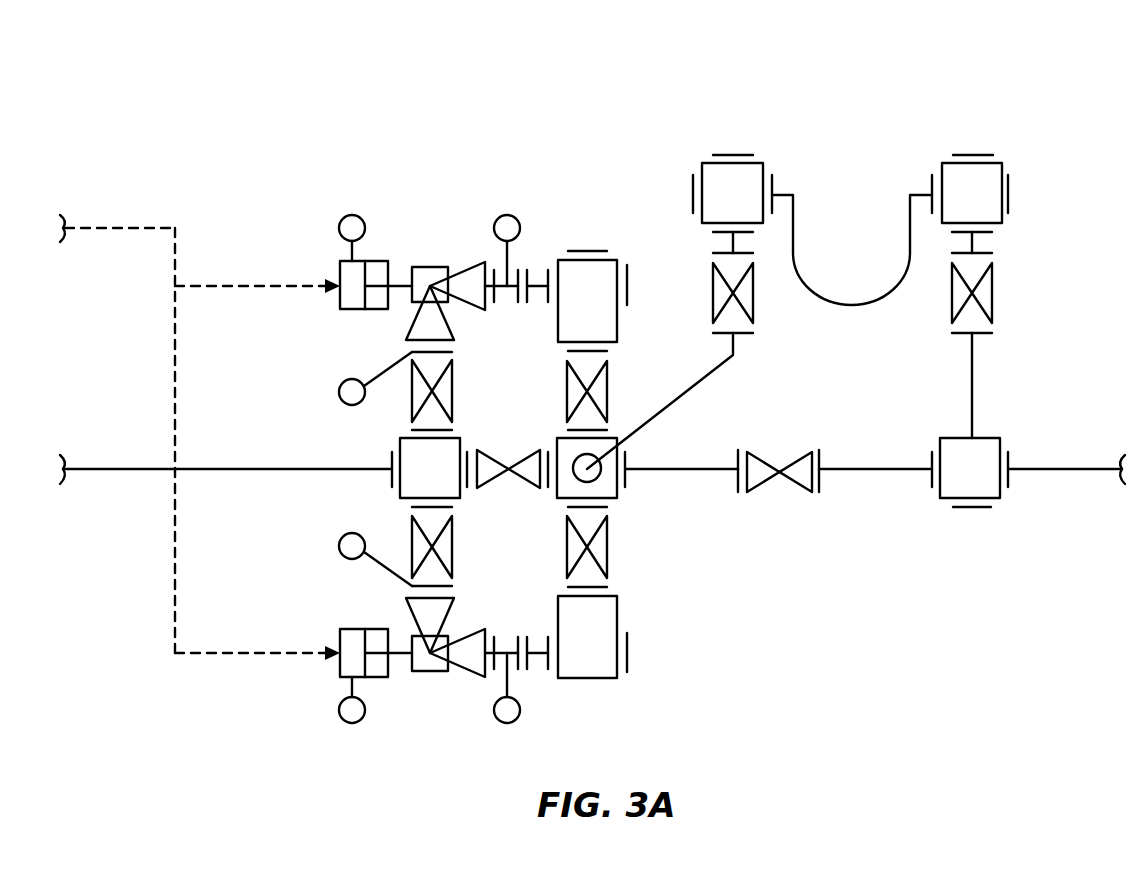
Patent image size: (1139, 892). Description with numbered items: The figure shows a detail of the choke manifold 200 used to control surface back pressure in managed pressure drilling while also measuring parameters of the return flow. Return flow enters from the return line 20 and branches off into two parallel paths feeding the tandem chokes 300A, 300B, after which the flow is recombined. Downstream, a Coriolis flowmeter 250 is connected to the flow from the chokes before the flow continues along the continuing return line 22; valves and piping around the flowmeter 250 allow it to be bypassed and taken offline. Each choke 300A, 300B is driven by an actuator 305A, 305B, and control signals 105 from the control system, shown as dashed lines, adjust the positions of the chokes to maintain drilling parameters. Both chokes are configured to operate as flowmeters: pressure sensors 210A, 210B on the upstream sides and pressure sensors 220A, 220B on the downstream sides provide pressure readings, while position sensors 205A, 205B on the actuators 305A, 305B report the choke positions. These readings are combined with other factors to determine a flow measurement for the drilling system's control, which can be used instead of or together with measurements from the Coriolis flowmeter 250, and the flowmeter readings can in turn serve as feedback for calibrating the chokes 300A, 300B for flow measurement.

The choke manifold 200 is at (812, 66).
The Coriolis flowmeter 250 is at (882, 146).
The control signals 105 is at (121, 228).
The return line 20 is at (147, 469).
The continuing return line 22 is at (1047, 469).
The position sensor 205A is at (340, 223).
The position sensor 205B is at (340, 715).
The pressure sensor 210A is at (340, 388).
The pressure sensor 210B is at (340, 550).
The pressure sensor 220A is at (519, 224).
The pressure sensor 220B is at (520, 716).
The choke 300A is at (430, 267).
The choke 300B is at (432, 671).
The actuator 305A is at (352, 309).
The actuator 305B is at (353, 629).